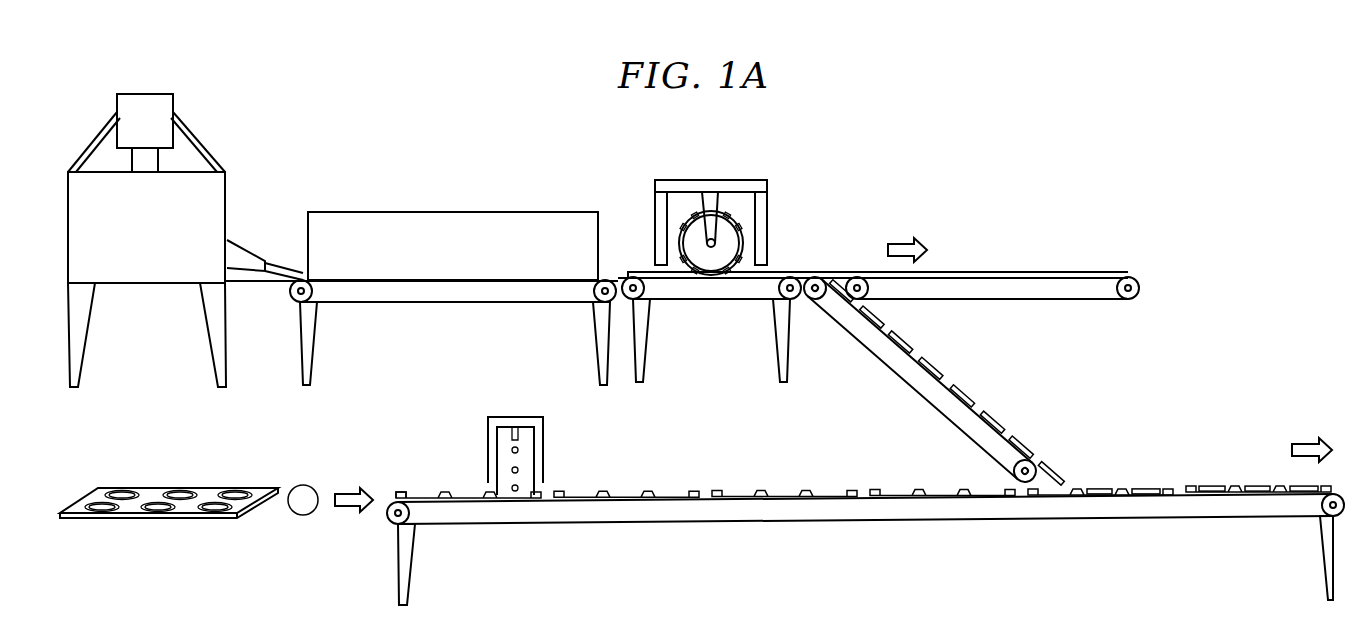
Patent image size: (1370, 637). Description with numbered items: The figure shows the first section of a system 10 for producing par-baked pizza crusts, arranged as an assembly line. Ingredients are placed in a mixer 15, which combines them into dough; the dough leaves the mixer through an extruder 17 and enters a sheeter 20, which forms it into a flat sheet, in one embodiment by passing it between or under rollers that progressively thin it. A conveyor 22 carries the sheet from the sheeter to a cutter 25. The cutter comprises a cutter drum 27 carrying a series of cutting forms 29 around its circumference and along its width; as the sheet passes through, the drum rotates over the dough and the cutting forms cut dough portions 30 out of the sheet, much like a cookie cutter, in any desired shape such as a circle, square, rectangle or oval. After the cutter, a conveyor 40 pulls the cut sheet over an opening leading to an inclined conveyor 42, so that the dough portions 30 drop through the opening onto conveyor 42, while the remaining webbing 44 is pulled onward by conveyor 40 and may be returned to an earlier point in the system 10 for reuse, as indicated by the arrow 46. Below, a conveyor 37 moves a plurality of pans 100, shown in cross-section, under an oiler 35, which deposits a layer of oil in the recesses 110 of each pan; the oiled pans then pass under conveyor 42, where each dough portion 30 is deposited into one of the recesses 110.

The system 10 is at (503, 105).
The mixer 15 is at (145, 93).
The extruder 17 is at (248, 243).
The sheeter 20 is at (452, 198).
The forming conveyor 22 is at (450, 303).
The cutter 25 is at (716, 168).
The cutter drum 27 is at (678, 208).
The cutting forms 29 is at (745, 221).
The dough portions 30 is at (905, 345).
The oiler 35 is at (515, 416).
The conveyor 37 is at (873, 524).
The conveyor 40 is at (1042, 299).
The conveyor 42 is at (912, 388).
The webbing 44 is at (1075, 268).
The arrow 46 is at (902, 238).
The pans 100 is at (175, 472).
The recesses 110 is at (423, 497).